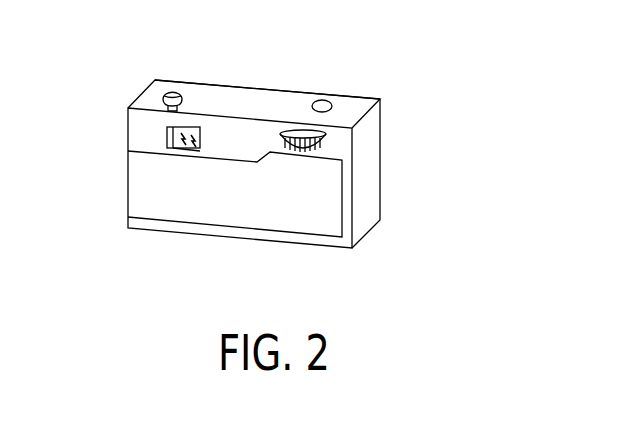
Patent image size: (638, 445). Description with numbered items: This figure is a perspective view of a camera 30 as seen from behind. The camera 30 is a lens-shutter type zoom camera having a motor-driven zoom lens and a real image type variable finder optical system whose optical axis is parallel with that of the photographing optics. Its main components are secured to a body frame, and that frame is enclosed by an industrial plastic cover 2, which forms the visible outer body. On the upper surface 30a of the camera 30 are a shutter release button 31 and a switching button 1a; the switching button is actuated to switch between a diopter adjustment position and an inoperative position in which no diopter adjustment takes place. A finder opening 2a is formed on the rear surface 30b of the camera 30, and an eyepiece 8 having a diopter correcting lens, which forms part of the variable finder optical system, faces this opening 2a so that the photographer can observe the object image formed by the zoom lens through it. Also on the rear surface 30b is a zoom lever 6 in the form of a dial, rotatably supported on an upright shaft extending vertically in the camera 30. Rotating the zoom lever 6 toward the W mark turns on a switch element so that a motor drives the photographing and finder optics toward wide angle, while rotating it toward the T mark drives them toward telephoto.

The knob / locking button 1a is at (165, 93).
The cover 2 is at (372, 138).
The finder opening 2a is at (167, 140).
The zoom lever 6 is at (297, 130).
The eyepiece 8 is at (183, 152).
The camera 30 is at (397, 177).
The upper surface 30a is at (236, 98).
The rear surface 30b is at (228, 212).
The shutter release button 31 is at (323, 101).